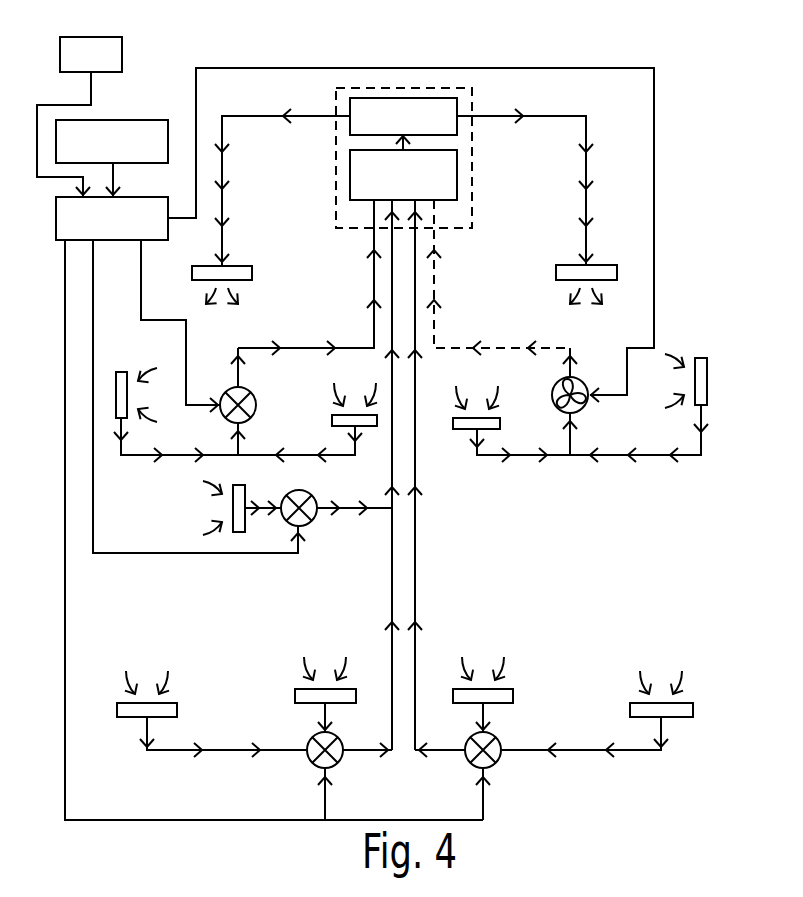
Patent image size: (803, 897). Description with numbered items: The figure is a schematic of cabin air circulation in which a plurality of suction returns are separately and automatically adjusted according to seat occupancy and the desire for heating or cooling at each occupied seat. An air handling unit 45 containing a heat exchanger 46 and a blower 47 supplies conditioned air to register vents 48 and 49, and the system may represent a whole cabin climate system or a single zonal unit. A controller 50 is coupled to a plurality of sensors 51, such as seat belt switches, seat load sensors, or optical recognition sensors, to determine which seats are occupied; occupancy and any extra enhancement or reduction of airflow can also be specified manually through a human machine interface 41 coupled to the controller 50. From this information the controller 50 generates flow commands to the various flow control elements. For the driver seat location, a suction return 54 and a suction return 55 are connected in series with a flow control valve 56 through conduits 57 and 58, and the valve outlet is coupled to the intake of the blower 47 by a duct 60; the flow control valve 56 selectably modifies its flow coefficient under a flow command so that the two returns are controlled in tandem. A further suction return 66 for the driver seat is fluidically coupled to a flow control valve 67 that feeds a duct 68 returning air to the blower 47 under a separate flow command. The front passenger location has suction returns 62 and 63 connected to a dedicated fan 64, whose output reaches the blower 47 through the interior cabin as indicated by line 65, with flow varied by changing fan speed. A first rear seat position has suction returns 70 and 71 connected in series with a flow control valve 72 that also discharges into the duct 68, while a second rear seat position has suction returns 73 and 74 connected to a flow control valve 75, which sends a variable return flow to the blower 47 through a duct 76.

The human machine interface 41 is at (92, 37).
The sensors 51 is at (143, 119).
The controller 50 is at (56, 217).
The air handling unit 45 is at (472, 106).
The heat exchanger 46 is at (422, 110).
The blower 47 is at (457, 180).
The register vent 48 is at (252, 272).
The register vent 49 is at (556, 271).
The duct 60 is at (373, 320).
The line 65 is at (450, 348).
The duct 68 is at (392, 586).
The duct 76 is at (417, 653).
The flow control valve 56 is at (223, 419).
The suction return 54 is at (122, 372).
The conduit 57 is at (185, 458).
The suction return 55 is at (332, 420).
The conduit 58 is at (296, 458).
The suction return 66 is at (245, 493).
The flow control valve 67 is at (306, 524).
The suction return 62 is at (453, 422).
The fan 64 is at (582, 378).
The suction return 63 is at (708, 380).
The suction return 70 is at (117, 710).
The suction return 71 is at (295, 696).
The flow control valve 72 is at (310, 760).
The suction return 74 is at (513, 697).
The suction return 73 is at (693, 710).
The flow control valve 75 is at (497, 763).